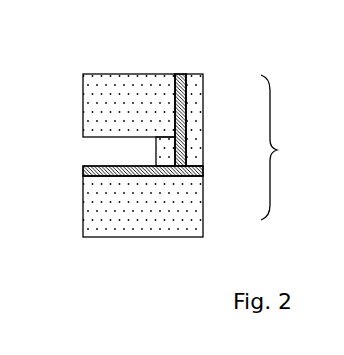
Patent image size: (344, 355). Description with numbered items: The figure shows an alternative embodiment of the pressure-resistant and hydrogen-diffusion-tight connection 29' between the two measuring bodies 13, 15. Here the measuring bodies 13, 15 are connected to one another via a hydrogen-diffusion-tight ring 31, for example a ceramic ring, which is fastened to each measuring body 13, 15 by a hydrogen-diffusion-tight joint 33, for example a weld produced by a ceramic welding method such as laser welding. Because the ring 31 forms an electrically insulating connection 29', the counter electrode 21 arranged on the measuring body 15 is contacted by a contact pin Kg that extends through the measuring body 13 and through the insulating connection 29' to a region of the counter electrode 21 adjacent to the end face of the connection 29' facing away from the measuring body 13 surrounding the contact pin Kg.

The measuring body 13 is at (152, 121).
The measuring body 15 is at (152, 219).
The counter electrode 21 is at (93, 172).
The hydrogen-diffusion-tight ring 31 is at (193, 153).
The hydrogen-diffusion-tight joint 33 is at (186, 128).
The contact pin Kg is at (183, 98).
The pressure-resistant and hydrogen-diffusion-tight connection 29' is at (287, 147).